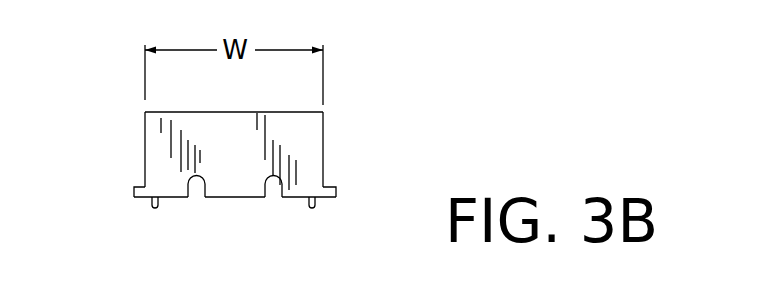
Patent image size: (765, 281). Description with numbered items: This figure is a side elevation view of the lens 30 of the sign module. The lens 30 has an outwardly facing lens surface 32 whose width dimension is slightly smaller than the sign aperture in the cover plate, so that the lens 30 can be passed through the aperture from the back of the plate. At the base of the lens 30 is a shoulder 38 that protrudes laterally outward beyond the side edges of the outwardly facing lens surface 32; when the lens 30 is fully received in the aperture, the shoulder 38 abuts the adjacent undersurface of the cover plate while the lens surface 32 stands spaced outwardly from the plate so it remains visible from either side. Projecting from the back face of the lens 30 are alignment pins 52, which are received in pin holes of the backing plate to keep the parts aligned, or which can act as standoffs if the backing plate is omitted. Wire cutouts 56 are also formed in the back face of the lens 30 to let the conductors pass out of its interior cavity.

The lens 30 is at (106, 147).
The outwardly facing lens surface 32 is at (232, 111).
The shoulder 38 is at (134, 192).
The alignment pins 52 is at (150, 209).
The wire cutouts 56 is at (270, 206).